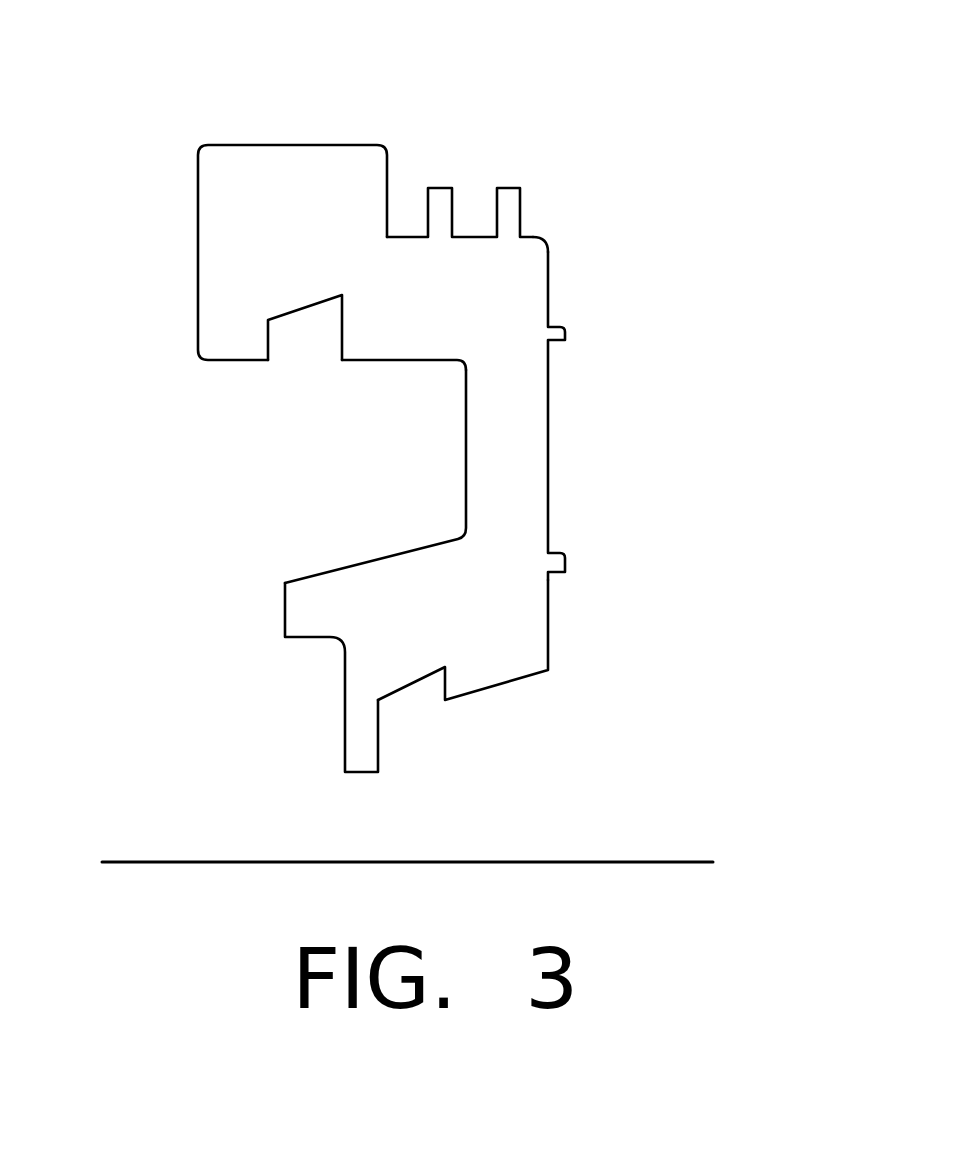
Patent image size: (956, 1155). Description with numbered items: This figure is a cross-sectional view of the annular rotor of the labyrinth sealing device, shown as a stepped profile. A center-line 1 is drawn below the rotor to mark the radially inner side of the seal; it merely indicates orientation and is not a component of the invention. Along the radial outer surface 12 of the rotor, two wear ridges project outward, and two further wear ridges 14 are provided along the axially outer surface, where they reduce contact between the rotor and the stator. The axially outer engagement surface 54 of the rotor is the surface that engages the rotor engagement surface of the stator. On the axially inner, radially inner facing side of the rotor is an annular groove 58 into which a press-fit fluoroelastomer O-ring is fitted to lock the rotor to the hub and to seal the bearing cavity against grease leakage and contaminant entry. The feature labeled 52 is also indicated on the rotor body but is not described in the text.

The center-line 1 is at (633, 862).
The radial outer surface 12 is at (440, 190).
The wear ridges 14 is at (565, 342).
The vertical wall 52 is at (465, 475).
The axially outer engagement surface 54 is at (550, 623).
The annular groove 58 is at (307, 340).